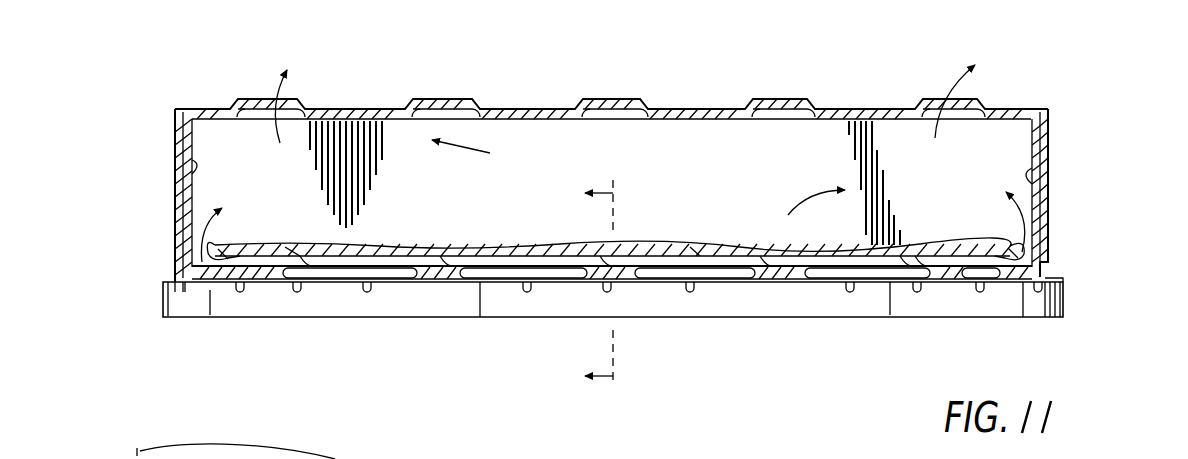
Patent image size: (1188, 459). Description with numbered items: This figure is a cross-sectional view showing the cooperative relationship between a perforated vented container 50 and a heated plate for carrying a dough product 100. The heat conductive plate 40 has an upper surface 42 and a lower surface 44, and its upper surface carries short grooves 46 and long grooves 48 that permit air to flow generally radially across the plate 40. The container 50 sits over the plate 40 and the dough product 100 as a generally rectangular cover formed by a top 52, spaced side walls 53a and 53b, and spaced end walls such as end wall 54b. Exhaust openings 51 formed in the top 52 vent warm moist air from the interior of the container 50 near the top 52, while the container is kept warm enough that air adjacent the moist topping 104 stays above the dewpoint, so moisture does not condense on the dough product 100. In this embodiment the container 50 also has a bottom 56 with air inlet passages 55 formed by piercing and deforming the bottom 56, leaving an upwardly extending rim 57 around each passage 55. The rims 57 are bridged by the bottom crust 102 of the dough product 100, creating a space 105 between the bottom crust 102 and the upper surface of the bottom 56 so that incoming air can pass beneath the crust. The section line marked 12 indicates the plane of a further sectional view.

The section line 12- 12 is at (615, 287).
The heat conductive plate 40 is at (364, 309).
The upper surface 42 is at (178, 283).
The lower surface 44 is at (470, 322).
The short grooves 46 is at (705, 291).
The long grooves 48 is at (598, 300).
The vented container 50 is at (526, 99).
The exhaust openings 51 is at (272, 147).
The top 52 is at (697, 108).
The side wall 53a is at (1049, 186).
The side wall 53b is at (196, 167).
The end wall 54b is at (742, 140).
The air inlet passages 55 is at (437, 275).
The bottom 56 is at (840, 290).
The rim 57 is at (922, 278).
The dough product 100 is at (235, 248).
The bottom crust 102 is at (700, 250).
The moist topping 104 is at (313, 213).
The space 105 is at (885, 290).